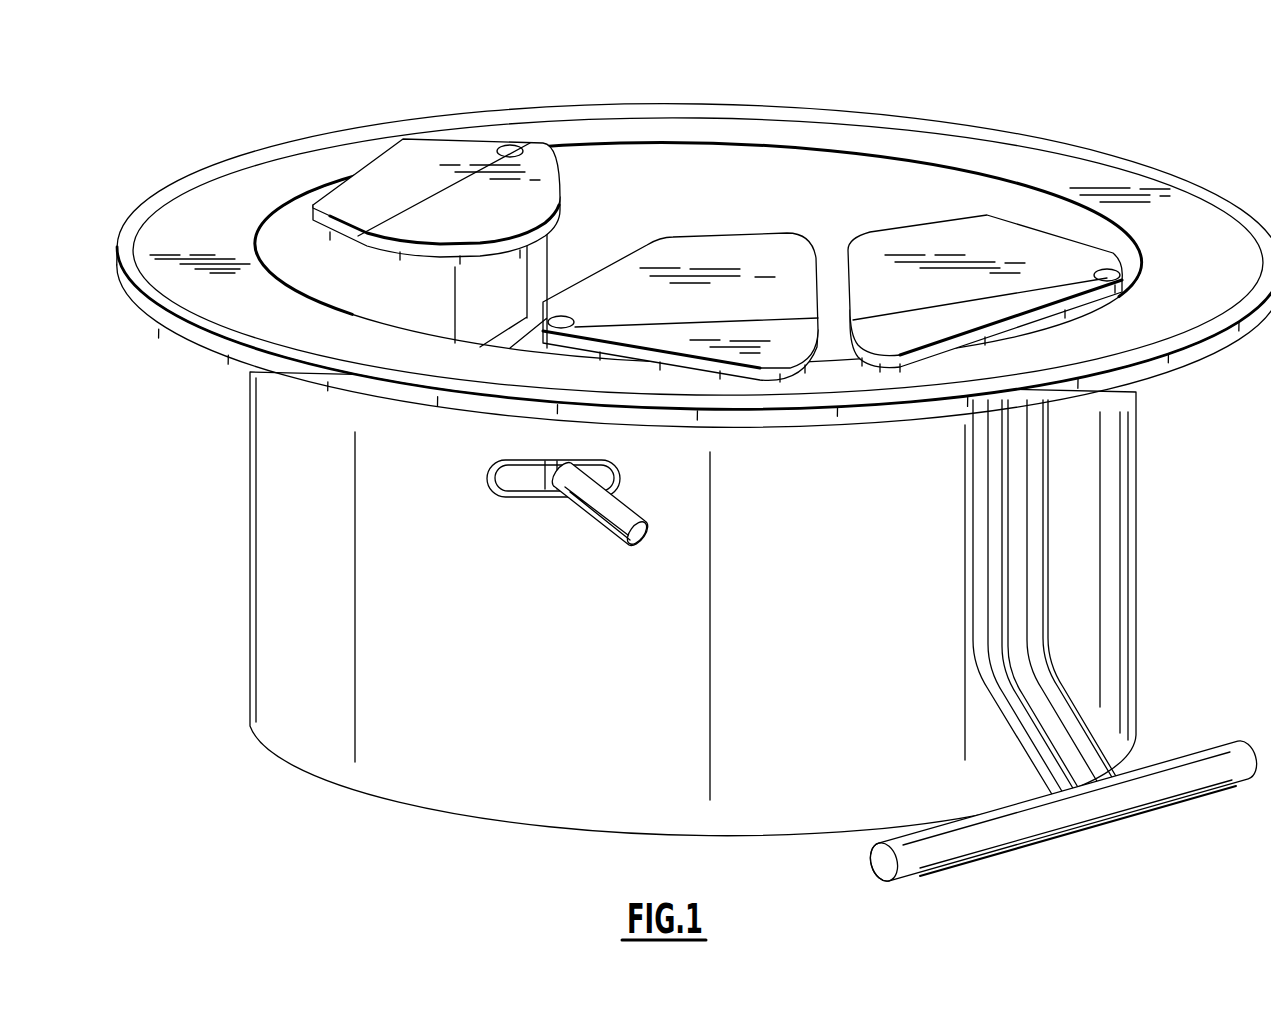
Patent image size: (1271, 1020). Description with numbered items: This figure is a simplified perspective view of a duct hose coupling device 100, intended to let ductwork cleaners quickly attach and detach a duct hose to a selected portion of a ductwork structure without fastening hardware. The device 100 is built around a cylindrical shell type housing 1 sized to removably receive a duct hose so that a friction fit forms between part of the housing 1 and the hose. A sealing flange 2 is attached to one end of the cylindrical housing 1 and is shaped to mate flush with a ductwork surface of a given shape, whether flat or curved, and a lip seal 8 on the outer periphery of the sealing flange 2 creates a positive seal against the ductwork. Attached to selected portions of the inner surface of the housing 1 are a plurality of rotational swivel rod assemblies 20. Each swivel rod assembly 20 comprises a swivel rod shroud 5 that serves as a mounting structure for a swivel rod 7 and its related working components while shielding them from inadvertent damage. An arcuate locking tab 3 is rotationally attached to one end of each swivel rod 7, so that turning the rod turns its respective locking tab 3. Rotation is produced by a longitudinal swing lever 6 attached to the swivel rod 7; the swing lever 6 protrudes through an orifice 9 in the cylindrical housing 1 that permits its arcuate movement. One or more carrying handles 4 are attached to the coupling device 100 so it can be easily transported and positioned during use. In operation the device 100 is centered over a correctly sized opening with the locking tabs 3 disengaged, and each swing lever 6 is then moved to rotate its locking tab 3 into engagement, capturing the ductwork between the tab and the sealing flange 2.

The duct hose coupling device 100 is at (160, 97).
The cylindrical housing 1 is at (278, 582).
The sealing flange 2 is at (183, 237).
The locking tab 3 is at (717, 260).
The carrying handle 4 is at (1048, 686).
The swivel rod shroud 5 is at (471, 291).
The swing lever 6 is at (607, 532).
The swivel rod 7 is at (543, 482).
The lip seal 8 is at (752, 110).
The orifice 9 is at (488, 482).
The swivel rod assembly 20 is at (643, 248).